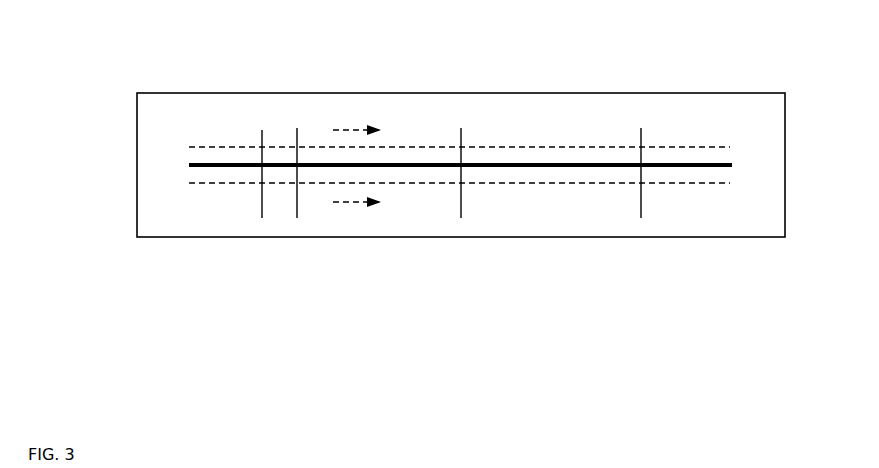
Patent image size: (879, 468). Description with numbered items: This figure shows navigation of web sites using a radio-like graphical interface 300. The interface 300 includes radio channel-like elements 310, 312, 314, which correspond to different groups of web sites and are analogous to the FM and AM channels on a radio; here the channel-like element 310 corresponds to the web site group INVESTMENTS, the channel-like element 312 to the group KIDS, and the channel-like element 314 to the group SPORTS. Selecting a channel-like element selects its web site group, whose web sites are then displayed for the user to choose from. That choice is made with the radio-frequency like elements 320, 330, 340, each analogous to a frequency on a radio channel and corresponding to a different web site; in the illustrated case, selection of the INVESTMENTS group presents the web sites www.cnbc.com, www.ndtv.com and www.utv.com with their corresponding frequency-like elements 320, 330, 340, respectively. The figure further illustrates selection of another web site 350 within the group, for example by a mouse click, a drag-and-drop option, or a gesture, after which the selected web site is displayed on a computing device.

The radio-like graphical interface 300 is at (484, 243).
The radio channel-like element 310 is at (737, 143).
The radio channel-like element 312 is at (750, 165).
The radio channel-like element 314 is at (737, 186).
The radio-frequency like element 320 is at (208, 273).
The radio-frequency like element 330 is at (460, 205).
The radio-frequency like element 340 is at (643, 205).
The another web site 350 is at (294, 126).